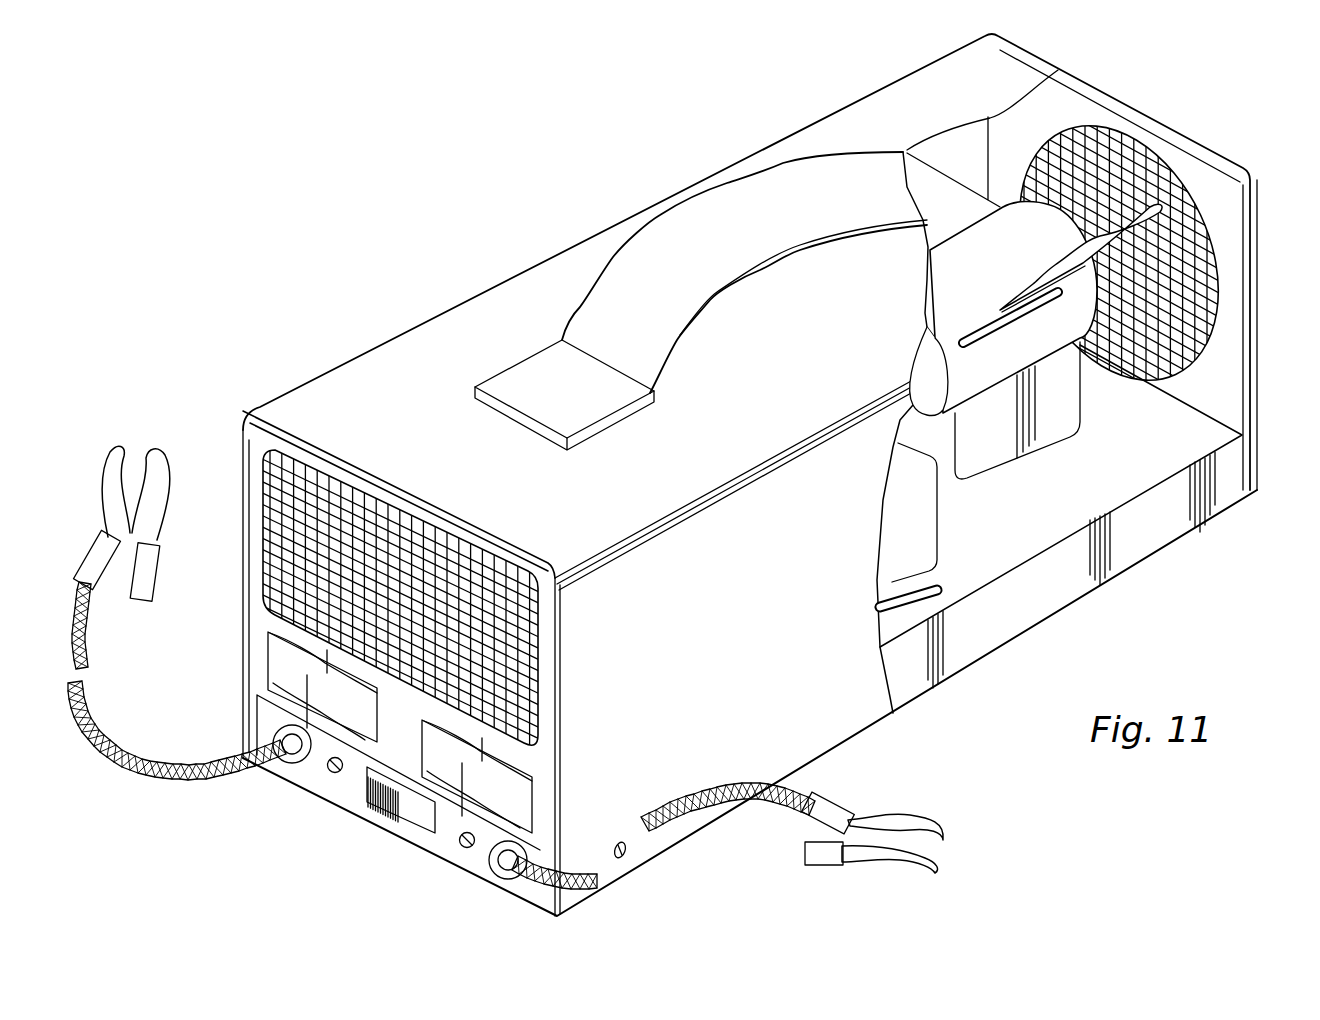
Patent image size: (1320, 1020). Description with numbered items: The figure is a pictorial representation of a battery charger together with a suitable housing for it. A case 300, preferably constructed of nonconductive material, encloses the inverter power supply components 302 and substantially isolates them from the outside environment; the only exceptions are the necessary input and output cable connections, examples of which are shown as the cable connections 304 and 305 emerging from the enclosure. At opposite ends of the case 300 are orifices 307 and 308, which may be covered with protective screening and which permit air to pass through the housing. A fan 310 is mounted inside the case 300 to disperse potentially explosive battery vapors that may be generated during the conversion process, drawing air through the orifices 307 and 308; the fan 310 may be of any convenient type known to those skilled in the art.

The case 300 is at (500, 262).
The inverter power supply components 302 is at (958, 565).
The output cable connection 304 is at (845, 805).
The output cable connection 305 is at (108, 556).
The orifice 307 is at (1120, 175).
The orifice 308 is at (292, 516).
The fan 310 is at (998, 267).